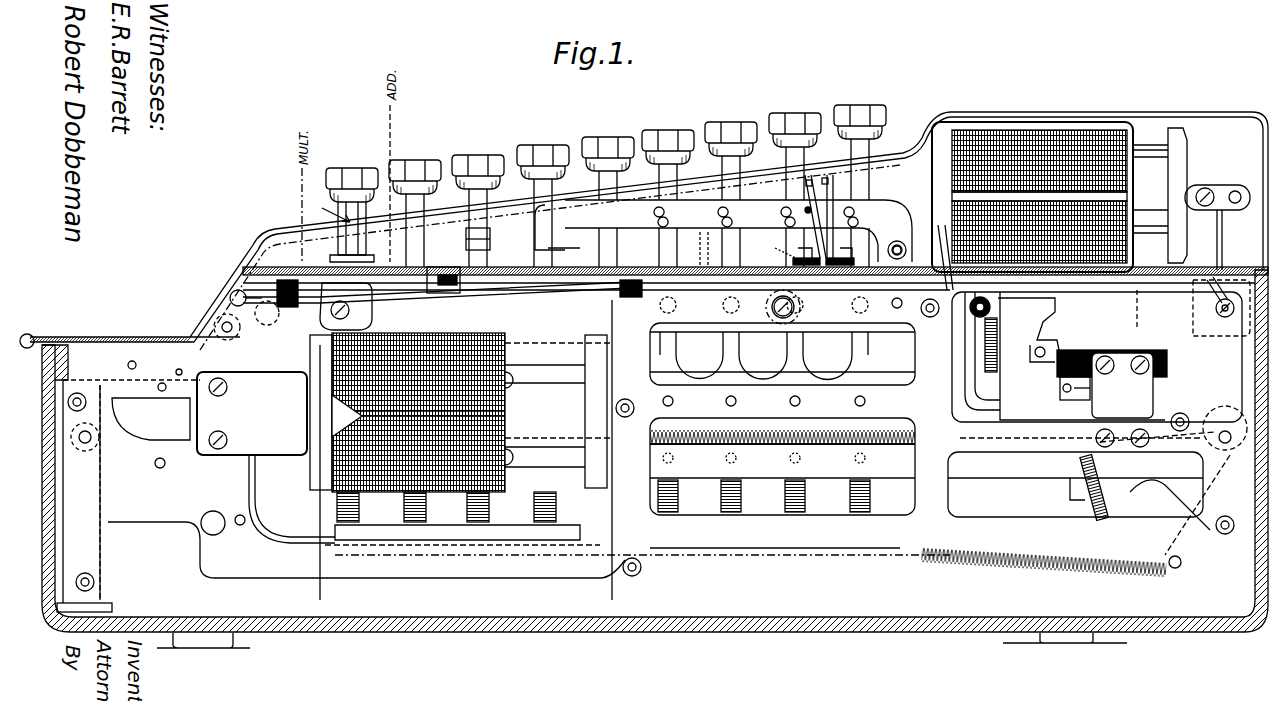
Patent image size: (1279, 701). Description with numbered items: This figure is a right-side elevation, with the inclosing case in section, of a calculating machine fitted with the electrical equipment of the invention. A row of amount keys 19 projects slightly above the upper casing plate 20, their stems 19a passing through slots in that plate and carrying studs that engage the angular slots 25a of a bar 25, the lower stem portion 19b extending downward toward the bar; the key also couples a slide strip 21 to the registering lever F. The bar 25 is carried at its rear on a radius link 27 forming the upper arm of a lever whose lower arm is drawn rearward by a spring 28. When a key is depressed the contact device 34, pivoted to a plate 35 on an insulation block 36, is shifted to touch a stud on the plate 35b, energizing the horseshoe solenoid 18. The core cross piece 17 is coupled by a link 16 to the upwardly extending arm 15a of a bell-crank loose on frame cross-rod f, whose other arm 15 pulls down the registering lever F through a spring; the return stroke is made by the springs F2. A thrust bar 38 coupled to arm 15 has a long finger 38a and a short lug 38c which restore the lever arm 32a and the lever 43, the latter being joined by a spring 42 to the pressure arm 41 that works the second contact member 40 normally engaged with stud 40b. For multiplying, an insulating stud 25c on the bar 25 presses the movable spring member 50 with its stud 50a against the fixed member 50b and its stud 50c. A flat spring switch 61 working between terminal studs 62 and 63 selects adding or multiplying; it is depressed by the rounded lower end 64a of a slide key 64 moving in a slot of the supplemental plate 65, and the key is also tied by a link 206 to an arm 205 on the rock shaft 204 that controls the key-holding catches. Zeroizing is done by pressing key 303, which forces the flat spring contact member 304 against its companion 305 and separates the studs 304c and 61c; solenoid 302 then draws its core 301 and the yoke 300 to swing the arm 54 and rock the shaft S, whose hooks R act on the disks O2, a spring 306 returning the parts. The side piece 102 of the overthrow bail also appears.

The slide key 64 is at (350, 200).
The short rounded lower end 64a is at (414, 170).
The zeroizing key 303 is at (480, 200).
The amount keys 19 is at (560, 170).
The key stems 19a is at (673, 180).
The key stem 19b is at (655, 205).
The bar 25 is at (760, 200).
The angular slots 25a is at (712, 202).
The insulating stud 25c is at (790, 258).
The movable contact member 50 is at (803, 192).
The contact stud 50a is at (812, 178).
The fixed contact member 50b is at (838, 188).
The contact stud 50c is at (828, 174).
The short finger or lug 38c is at (920, 222).
The laterally projecting finger 38a is at (948, 255).
The upper casing plate 20 is at (992, 112).
The horseshoe solenoid 18 is at (1067, 138).
The cross piece 17 is at (1180, 140).
The link 16 is at (1222, 187).
The upwardly extending arm 15a is at (1222, 236).
The forwardly and downwardly extending arm 15 is at (1210, 537).
The terminal stud 63 is at (263, 248).
The supplemental plate 65 is at (307, 262).
The contact stud 61c is at (397, 262).
The controlling switch 61 is at (360, 293).
The contact stud 304c is at (448, 290).
The contact member 304 is at (505, 288).
The terminal stud 62 is at (255, 520).
The yoke 300 is at (438, 520).
The horseshoe solenoid 302 is at (510, 490).
The solenoid core 301 is at (572, 460).
The companion contact member 305 is at (520, 348).
The arm 54 is at (245, 480).
The rock shaft S is at (216, 535).
The hooks R is at (92, 334).
The disks O2 is at (137, 337).
The radius link 27 is at (887, 288).
The slide strips 21 is at (675, 340).
The rock shaft 204 is at (655, 326).
The spring 28 is at (870, 363).
The spring 306 is at (838, 440).
The upwardly extending arm 32a is at (962, 346).
The lever 43 is at (968, 375).
The pressure arm 41 is at (1032, 305).
The spring 42 is at (997, 330).
The contact device 34 is at (1060, 313).
The second contact member 40 is at (1050, 336).
The plate 35 is at (1093, 351).
The contact stud 40b is at (1082, 382).
The plate 35b is at (1095, 392).
The thrust bar 38 is at (1137, 290).
The insulation block 36 is at (1153, 350).
The bail side piece 102 is at (1173, 377).
The registering lever F is at (1010, 470).
The springs F2 is at (1120, 558).
The frame cross-rod f is at (1228, 442).
The link 206 is at (547, 250).
The arm 205 is at (672, 256).